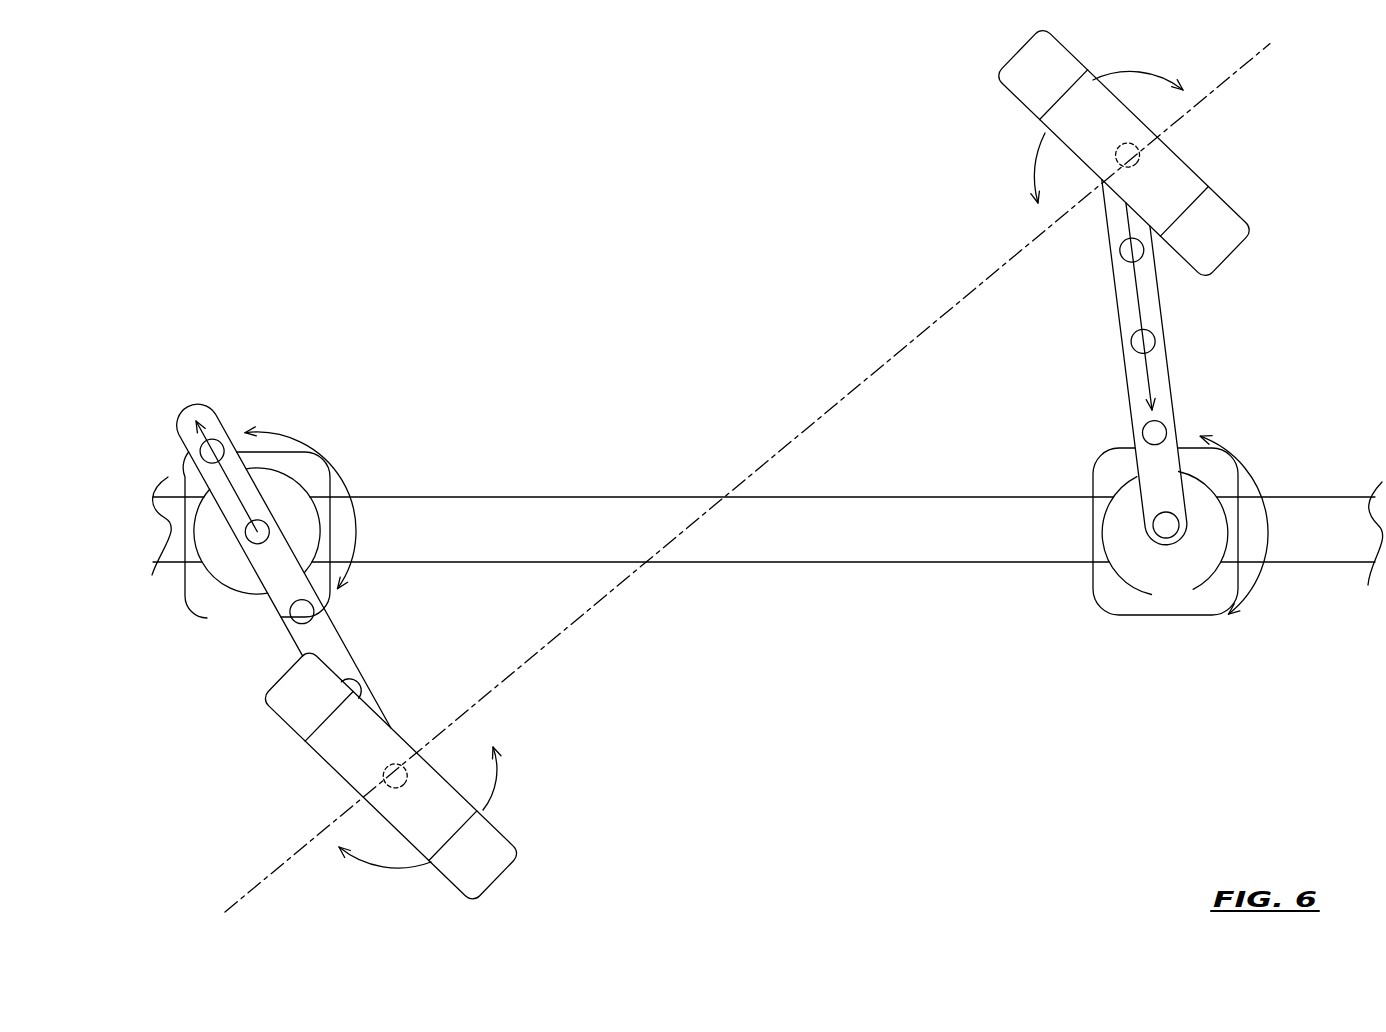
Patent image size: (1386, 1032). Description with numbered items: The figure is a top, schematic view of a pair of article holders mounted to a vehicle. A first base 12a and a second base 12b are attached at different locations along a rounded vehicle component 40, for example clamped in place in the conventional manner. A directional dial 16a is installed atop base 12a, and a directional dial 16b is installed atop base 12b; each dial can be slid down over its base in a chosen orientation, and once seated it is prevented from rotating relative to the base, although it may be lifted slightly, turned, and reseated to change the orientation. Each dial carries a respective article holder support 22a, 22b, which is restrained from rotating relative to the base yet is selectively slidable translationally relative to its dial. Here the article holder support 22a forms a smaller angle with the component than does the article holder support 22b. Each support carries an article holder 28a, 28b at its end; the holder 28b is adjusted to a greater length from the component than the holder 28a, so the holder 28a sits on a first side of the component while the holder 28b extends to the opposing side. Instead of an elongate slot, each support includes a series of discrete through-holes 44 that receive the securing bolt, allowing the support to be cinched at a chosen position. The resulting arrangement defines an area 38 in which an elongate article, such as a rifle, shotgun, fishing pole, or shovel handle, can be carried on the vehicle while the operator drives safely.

The base 12a is at (190, 604).
The base 12b is at (1105, 588).
The directional dial 16a is at (231, 580).
The directional dial 16b is at (1173, 577).
The article holder support 22a is at (340, 637).
The article holder support 22b is at (1168, 375).
The article holder 28a is at (494, 842).
The article holder 28b is at (1219, 213).
The area 38 is at (885, 362).
The vehicle component 40 is at (403, 507).
The discrete through-holes 44 is at (218, 440).